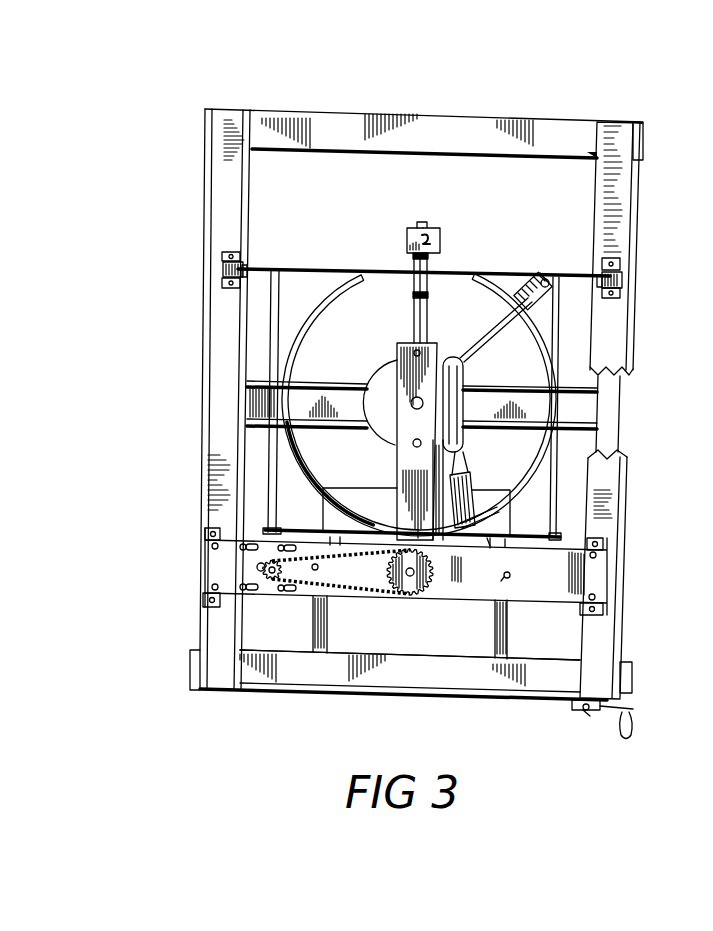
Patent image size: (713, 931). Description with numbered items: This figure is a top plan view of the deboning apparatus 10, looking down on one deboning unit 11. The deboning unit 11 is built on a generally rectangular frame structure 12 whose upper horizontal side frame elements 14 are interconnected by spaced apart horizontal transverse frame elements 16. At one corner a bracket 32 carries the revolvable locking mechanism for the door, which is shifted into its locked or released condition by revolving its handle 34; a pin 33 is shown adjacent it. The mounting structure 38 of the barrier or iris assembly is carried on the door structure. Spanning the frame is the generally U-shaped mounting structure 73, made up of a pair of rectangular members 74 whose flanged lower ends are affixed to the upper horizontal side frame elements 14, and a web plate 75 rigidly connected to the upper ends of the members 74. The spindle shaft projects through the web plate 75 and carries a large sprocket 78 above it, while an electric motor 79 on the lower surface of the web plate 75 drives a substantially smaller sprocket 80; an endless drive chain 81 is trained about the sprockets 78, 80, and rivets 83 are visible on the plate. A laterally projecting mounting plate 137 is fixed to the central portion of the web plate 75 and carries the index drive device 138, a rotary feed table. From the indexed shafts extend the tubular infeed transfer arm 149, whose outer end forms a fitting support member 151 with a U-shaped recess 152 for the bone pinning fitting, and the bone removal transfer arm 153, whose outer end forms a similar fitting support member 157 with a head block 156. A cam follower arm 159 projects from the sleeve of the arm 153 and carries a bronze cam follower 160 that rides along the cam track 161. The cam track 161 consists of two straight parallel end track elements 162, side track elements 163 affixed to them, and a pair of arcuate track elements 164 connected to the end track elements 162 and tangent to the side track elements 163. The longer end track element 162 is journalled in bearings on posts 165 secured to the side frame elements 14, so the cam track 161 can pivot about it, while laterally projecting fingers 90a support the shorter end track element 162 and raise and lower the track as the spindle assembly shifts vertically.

The apparatus 10 is at (170, 56).
The deboning unit 11 is at (178, 567).
The frame structure 12 is at (653, 131).
The upper horizontal side frame element 14 is at (216, 196).
The horizontal transverse frame element 16 is at (499, 119).
The bracket 32 is at (573, 702).
The pin 33 is at (584, 716).
The handle 34 is at (628, 709).
The mounting structure 38 is at (385, 668).
The mounting structure 73 is at (622, 582).
The rectangular member 74 is at (205, 540).
The web plate 75 is at (550, 597).
The large sprocket 78 is at (418, 588).
The electric motor 79 is at (272, 600).
The sprocket 80 is at (265, 566).
The drive chain 81 is at (367, 603).
The rivets 83 is at (318, 567).
The finger 90a is at (489, 543).
The mounting plate 137 is at (404, 368).
The drive device 138 is at (462, 381).
The infeed transfer arm 149 is at (497, 333).
The fitting support member 151 is at (531, 289).
The U-shaped recess 152 is at (546, 284).
The bone removal transfer arm 153 is at (427, 314).
The head block 156 is at (439, 239).
The fitting support member 157 is at (413, 231).
The cam follower arm 159 is at (417, 319).
The cam follower 160 is at (428, 263).
The cam track 161 is at (327, 261).
The end track element 162 is at (348, 268).
The side track element 163 is at (273, 332).
The arcuate track element 164 is at (295, 346).
The post 165 is at (221, 254).